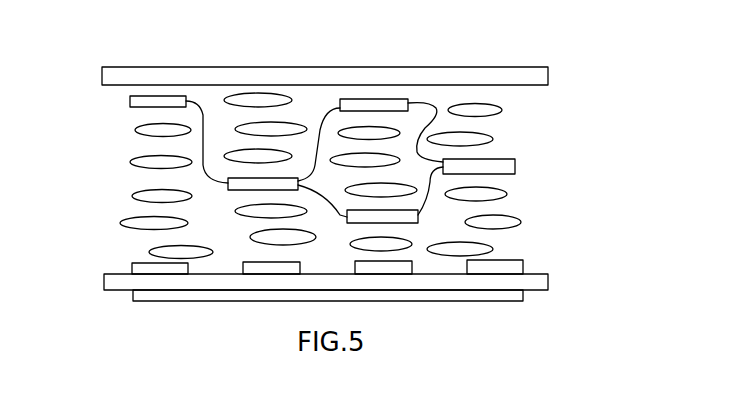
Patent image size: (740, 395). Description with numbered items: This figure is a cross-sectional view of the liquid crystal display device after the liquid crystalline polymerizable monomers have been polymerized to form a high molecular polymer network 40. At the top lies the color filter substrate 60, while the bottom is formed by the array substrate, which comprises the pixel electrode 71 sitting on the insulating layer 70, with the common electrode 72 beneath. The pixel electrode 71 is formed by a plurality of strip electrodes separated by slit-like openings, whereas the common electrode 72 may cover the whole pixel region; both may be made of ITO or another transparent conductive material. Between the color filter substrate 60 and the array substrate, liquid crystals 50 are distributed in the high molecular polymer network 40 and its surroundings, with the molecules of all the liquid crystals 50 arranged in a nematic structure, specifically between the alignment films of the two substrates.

The color filter substrate 60 is at (540, 75).
The liquid crystals 50 is at (140, 162).
The high molecular polymer network 40 is at (506, 177).
The pixel electrode 71 is at (510, 264).
The insulating layer 70 is at (538, 282).
The common electrode 72 is at (133, 297).